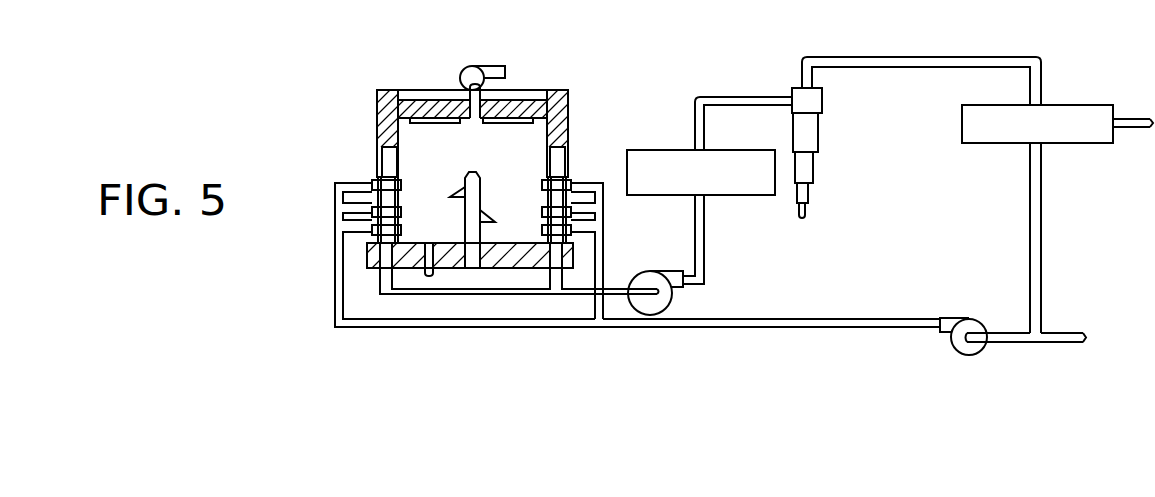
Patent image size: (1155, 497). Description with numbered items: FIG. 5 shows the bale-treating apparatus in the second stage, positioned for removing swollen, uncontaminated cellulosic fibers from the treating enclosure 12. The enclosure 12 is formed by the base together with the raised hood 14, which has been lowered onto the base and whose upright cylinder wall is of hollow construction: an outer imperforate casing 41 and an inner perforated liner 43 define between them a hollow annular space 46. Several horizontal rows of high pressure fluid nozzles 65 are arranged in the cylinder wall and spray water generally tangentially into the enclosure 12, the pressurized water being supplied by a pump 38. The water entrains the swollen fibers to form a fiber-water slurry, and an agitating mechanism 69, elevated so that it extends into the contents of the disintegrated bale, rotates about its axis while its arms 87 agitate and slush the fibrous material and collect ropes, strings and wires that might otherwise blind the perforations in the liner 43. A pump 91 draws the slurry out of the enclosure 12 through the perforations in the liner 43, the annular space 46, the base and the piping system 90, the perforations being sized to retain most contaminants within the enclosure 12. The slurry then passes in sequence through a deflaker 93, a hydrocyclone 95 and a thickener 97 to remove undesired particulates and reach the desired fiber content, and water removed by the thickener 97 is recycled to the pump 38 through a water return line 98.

The treating enclosure 12 is at (388, 90).
The hood 14 is at (563, 90).
The pump 38 is at (960, 320).
The outer imperforate casing 41 is at (378, 146).
The inner perforated liner 43 is at (400, 152).
The hollow annular space 46 is at (372, 200).
The high pressure fluid nozzles 65 is at (378, 170).
The agitating mechanism 69 is at (467, 172).
The arms 87 is at (487, 210).
The piping system 90 is at (382, 280).
The pump 91 is at (673, 296).
The deflaker 93 is at (724, 195).
The hydrocyclone 95 is at (822, 130).
The thickener 97 is at (962, 145).
The water return line 98 is at (1041, 230).